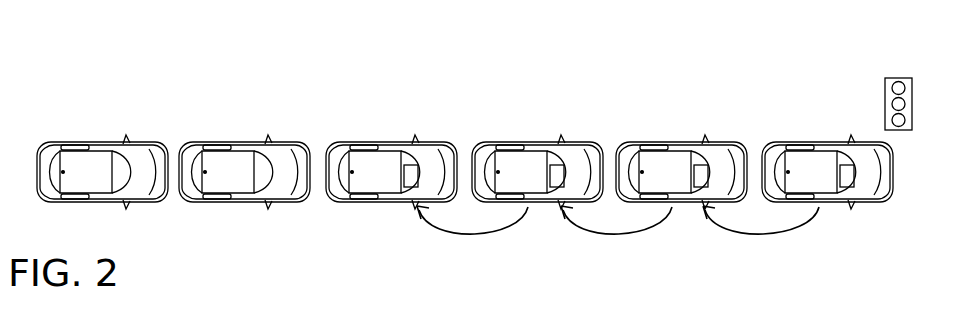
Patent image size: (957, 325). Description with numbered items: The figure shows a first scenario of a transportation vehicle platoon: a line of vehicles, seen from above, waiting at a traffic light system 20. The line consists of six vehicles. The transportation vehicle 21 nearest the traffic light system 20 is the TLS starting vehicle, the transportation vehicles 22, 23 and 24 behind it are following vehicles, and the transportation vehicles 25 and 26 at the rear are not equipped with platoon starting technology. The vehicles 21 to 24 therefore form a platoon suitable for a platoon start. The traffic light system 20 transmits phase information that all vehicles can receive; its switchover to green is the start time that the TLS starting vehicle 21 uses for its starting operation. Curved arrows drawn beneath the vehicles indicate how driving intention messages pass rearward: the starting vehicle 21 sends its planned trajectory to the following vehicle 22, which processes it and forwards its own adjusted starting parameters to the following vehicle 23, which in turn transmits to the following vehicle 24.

The traffic light system 20 is at (904, 80).
The TLS starting transportation vehicle 21 is at (803, 142).
The following transportation vehicle 22 is at (661, 142).
The following transportation vehicle 23 is at (514, 142).
The following transportation vehicle 24 is at (370, 142).
The transportation vehicle not equipped with platoon starting technology 25 is at (224, 142).
The transportation vehicle not equipped with platoon starting technology 26 is at (82, 142).